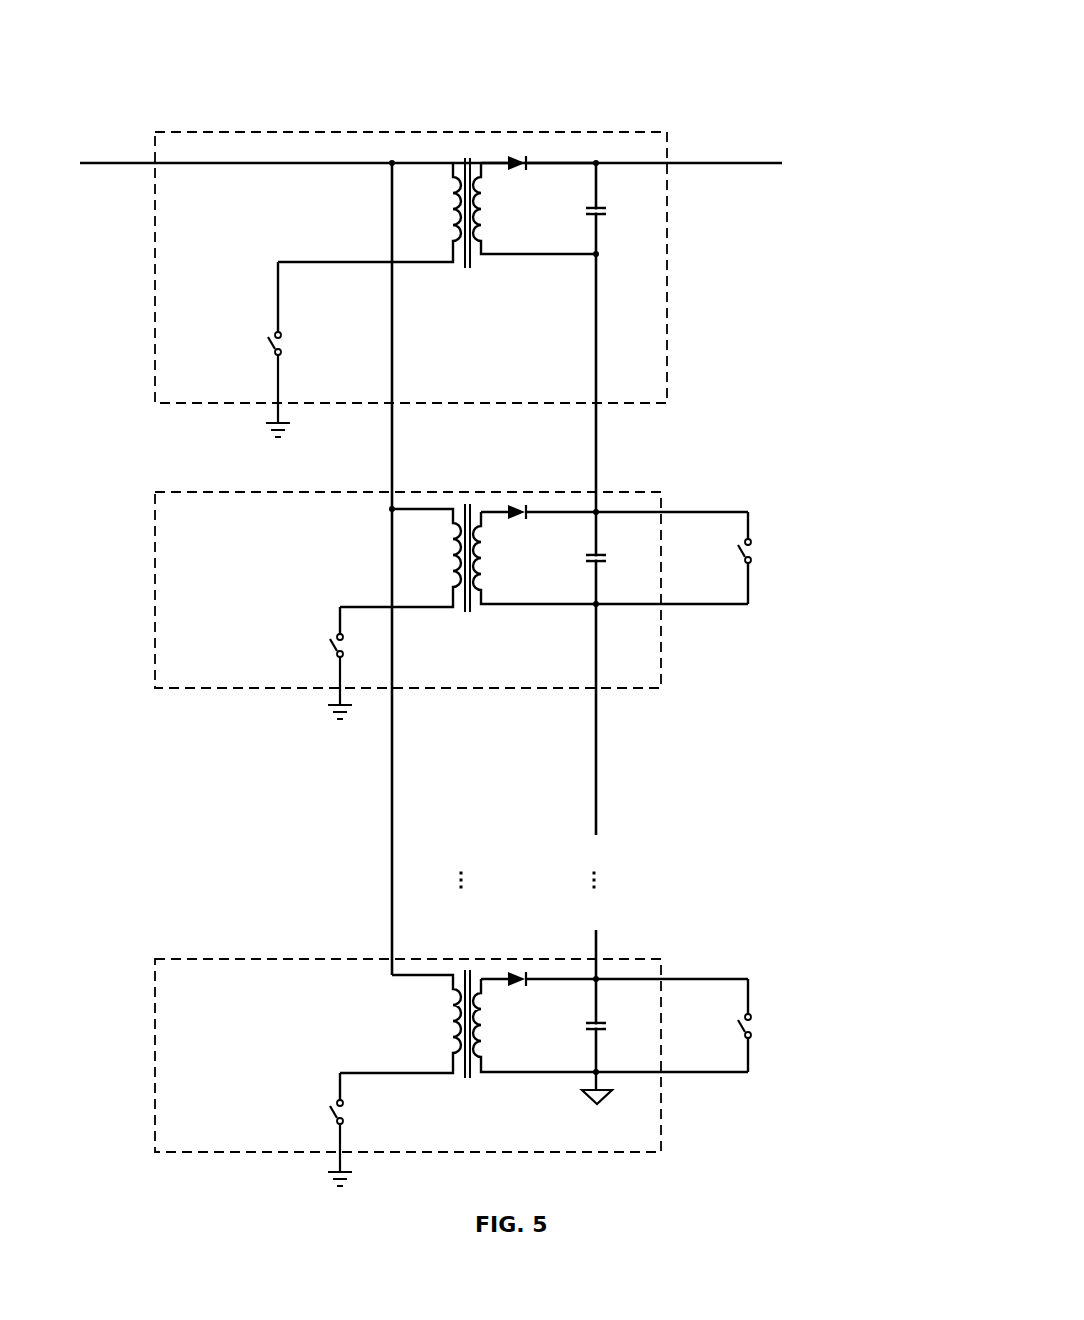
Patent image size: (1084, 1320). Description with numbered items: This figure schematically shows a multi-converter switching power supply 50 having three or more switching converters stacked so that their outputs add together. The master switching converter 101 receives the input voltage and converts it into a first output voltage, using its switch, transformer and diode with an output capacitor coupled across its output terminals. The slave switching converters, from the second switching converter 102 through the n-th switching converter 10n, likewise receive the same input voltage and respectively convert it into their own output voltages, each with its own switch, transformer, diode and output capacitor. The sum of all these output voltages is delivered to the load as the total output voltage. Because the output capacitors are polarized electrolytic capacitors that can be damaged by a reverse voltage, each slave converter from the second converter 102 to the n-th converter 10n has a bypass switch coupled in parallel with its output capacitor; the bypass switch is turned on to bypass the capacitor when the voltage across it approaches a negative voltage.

The multi-converter switching power supply 50 is at (673, 58).
The master switching converter 101 is at (185, 404).
The slave switching converter 102 is at (192, 689).
The n-th slave switching converter 10n is at (185, 1153).